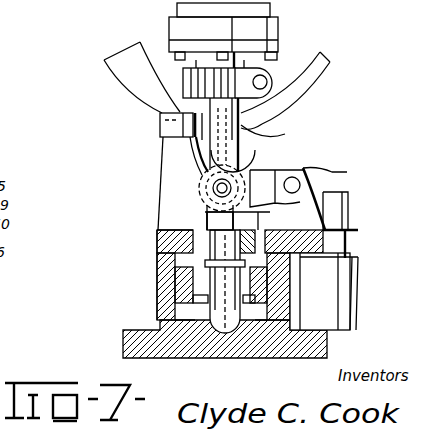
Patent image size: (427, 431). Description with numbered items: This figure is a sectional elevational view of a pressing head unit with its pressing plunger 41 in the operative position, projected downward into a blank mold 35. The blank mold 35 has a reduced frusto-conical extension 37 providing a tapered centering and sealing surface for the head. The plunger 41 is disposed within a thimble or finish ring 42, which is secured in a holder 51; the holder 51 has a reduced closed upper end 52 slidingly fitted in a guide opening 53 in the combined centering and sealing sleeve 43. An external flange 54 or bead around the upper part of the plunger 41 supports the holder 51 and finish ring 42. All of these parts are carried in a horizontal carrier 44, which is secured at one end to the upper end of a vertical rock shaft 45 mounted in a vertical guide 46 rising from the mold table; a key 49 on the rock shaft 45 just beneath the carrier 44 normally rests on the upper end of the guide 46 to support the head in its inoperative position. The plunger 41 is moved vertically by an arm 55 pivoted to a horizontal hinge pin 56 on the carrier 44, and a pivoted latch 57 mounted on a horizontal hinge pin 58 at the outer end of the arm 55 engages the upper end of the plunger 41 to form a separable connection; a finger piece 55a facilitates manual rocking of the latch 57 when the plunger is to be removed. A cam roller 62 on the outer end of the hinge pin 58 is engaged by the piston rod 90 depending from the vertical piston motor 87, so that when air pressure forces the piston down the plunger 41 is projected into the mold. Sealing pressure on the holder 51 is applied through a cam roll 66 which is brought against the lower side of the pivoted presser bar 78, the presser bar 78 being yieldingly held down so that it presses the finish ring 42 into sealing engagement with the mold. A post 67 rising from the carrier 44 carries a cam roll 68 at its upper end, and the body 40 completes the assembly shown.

The vertical piston motor 87 is at (278, 22).
The presser bar 78 is at (125, 80).
The cam roll 68 is at (168, 128).
The pivoted latch 57 is at (192, 145).
The piston rod 90 is at (262, 132).
The cam roll 66 is at (262, 144).
The cam roller 62 is at (250, 158).
The horizontal hinge pin 58 is at (212, 190).
The post 67 is at (163, 197).
The horizontal carrier 44 is at (157, 233).
The reduced closed upper end 52 is at (207, 224).
The arm 55 is at (268, 208).
The horizontal hinge pin 56 is at (296, 180).
The finger piece 55a is at (330, 173).
The guide opening 53 is at (158, 240).
The centering and sealing sleeve 43 is at (160, 263).
The holder 51 is at (177, 283).
The finish ring 42 is at (193, 300).
The frusto-conical extension 37 is at (162, 318).
The blank mold 35 is at (132, 343).
The external flange 54 is at (222, 257).
The pressing plunger 41 is at (232, 309).
The body 40 is at (398, 216).
The vertical rock shaft 45 is at (367, 250).
The key 49 is at (347, 263).
The vertical guide 46 is at (343, 288).